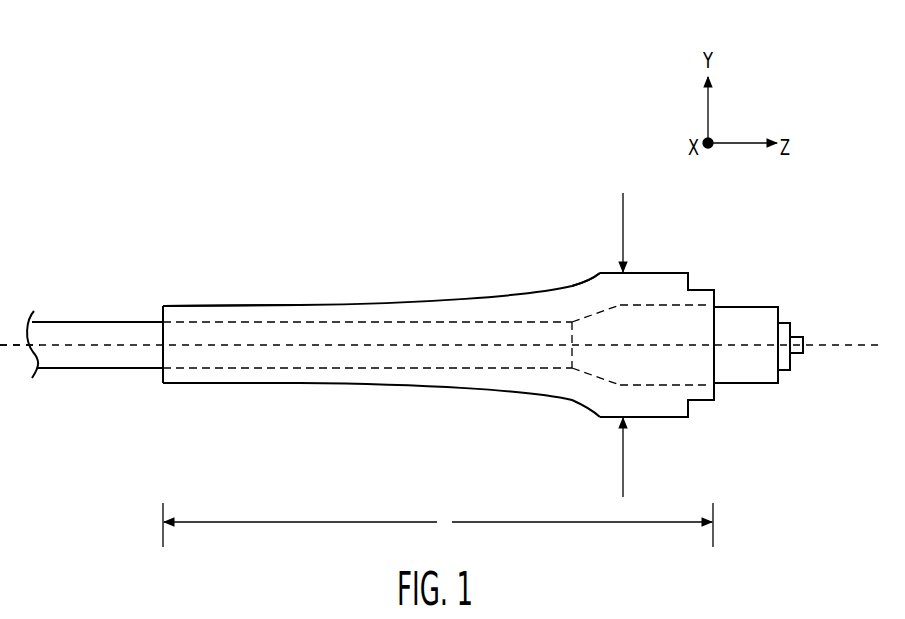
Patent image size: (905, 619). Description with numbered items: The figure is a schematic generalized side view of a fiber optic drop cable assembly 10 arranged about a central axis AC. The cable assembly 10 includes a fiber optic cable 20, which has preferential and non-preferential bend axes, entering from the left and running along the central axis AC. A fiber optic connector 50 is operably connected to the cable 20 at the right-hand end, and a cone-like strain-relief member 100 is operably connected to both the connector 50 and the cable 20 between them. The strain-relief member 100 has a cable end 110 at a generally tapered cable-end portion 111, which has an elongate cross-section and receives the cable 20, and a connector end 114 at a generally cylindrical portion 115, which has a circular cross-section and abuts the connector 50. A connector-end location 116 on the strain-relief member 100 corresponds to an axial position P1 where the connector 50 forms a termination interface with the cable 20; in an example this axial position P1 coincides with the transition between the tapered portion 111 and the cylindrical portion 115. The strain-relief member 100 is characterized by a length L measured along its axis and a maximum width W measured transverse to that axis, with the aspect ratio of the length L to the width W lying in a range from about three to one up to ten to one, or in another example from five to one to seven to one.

The cable assembly 10 is at (163, 134).
The fiber optic cable 20 is at (140, 328).
The fiber optic connector 50 is at (733, 307).
The strain-relief member 100 is at (432, 298).
The cable end 110 is at (163, 383).
The tapered cable-end portion 111 is at (265, 289).
The connector end 114 is at (717, 393).
The cylindrical portion 115 is at (644, 264).
The connector-end location 116 is at (597, 283).
The central axis AC is at (14, 346).
The axial position P1 is at (572, 368).
The maximum width W is at (623, 223).
The length L is at (438, 525).